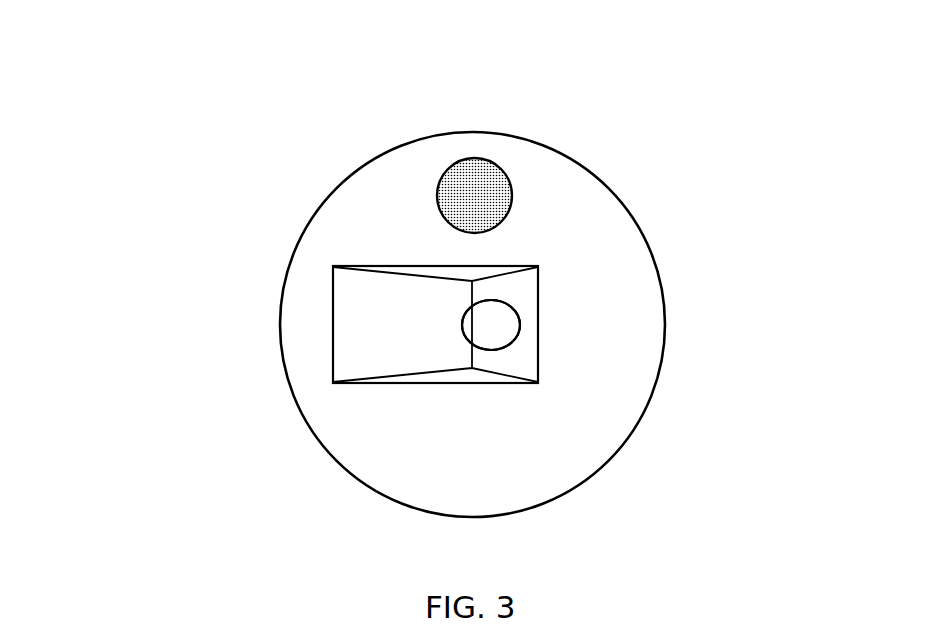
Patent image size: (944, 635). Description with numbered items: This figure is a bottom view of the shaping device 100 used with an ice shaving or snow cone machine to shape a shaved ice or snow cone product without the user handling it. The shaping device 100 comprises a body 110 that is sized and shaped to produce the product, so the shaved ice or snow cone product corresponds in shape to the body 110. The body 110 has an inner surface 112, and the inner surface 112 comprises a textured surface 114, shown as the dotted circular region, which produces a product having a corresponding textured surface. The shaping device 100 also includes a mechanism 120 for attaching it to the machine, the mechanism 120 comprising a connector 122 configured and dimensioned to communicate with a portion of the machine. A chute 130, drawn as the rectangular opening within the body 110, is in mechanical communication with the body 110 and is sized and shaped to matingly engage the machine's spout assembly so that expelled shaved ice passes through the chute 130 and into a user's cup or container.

The shaping device 100 is at (303, 167).
The body 110 is at (667, 322).
The inner surface 112 is at (587, 248).
The textured surface 114 is at (470, 193).
The mechanism 120 is at (490, 349).
The connector 122 is at (520, 327).
The chute 130 is at (333, 325).